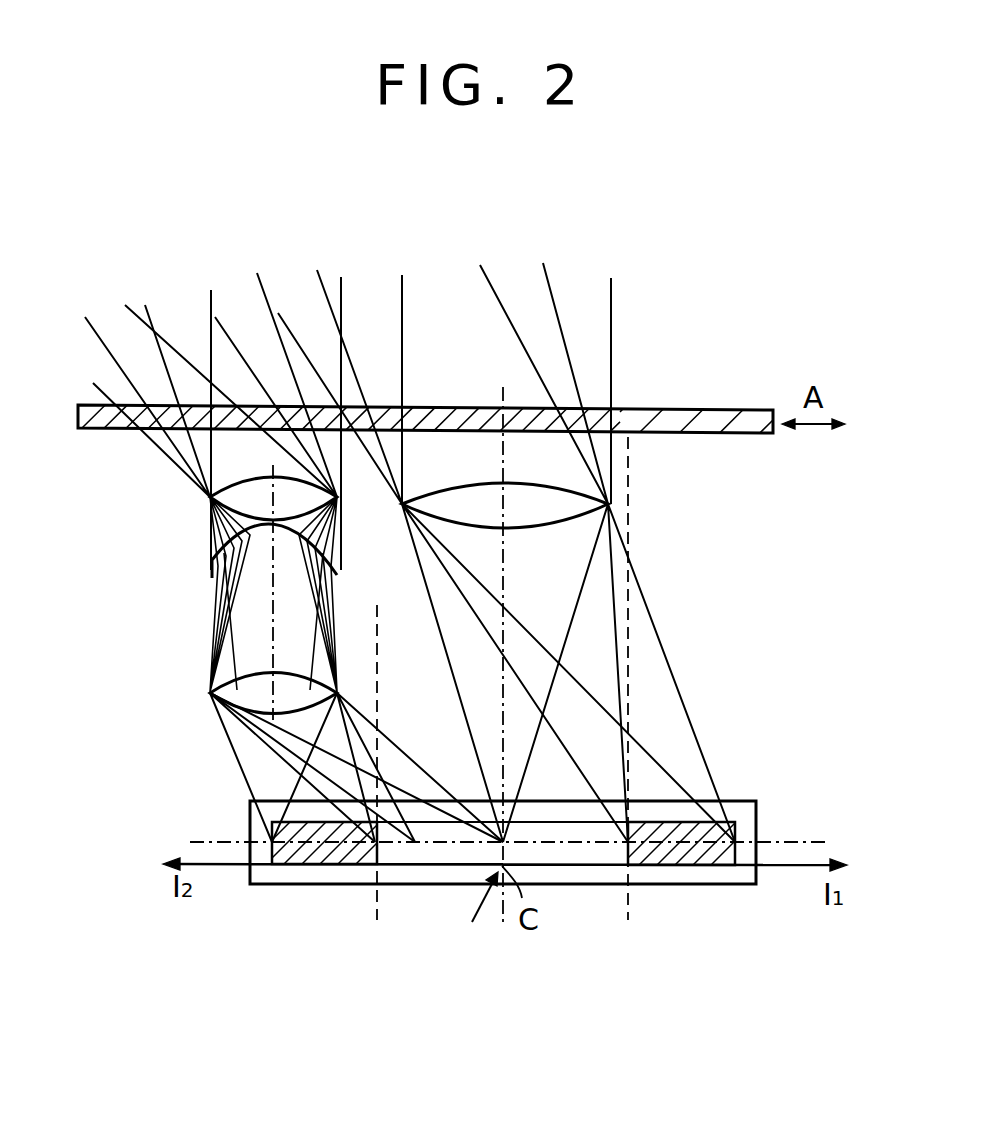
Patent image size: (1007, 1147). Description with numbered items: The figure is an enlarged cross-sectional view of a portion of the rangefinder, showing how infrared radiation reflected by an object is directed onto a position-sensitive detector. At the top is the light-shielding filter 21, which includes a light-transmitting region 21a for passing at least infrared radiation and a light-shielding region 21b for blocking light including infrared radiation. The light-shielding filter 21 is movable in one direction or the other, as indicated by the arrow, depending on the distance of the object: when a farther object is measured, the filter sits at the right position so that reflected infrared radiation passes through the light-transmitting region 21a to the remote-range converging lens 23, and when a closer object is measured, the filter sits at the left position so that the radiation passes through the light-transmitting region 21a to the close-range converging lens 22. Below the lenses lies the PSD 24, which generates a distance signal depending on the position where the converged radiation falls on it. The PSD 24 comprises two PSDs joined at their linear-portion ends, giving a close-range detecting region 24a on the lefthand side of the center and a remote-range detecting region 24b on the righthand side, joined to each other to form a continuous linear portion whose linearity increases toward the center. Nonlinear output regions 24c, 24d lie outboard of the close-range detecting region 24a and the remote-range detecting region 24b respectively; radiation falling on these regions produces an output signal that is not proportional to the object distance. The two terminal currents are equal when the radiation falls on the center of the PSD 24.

The light-shielding filter 21 is at (425, 366).
The light-transmitting region 21a is at (447, 410).
The light-shielding region 21b is at (290, 407).
The close-range converging lens 22 is at (222, 635).
The remote-range converging lens 23 is at (543, 510).
The PSD 24 is at (495, 890).
The close-range detecting region 24a is at (420, 855).
The remote-range detecting region 24b is at (582, 855).
The nonlinear output region 24c is at (290, 864).
The nonlinear output region 24d is at (683, 865).